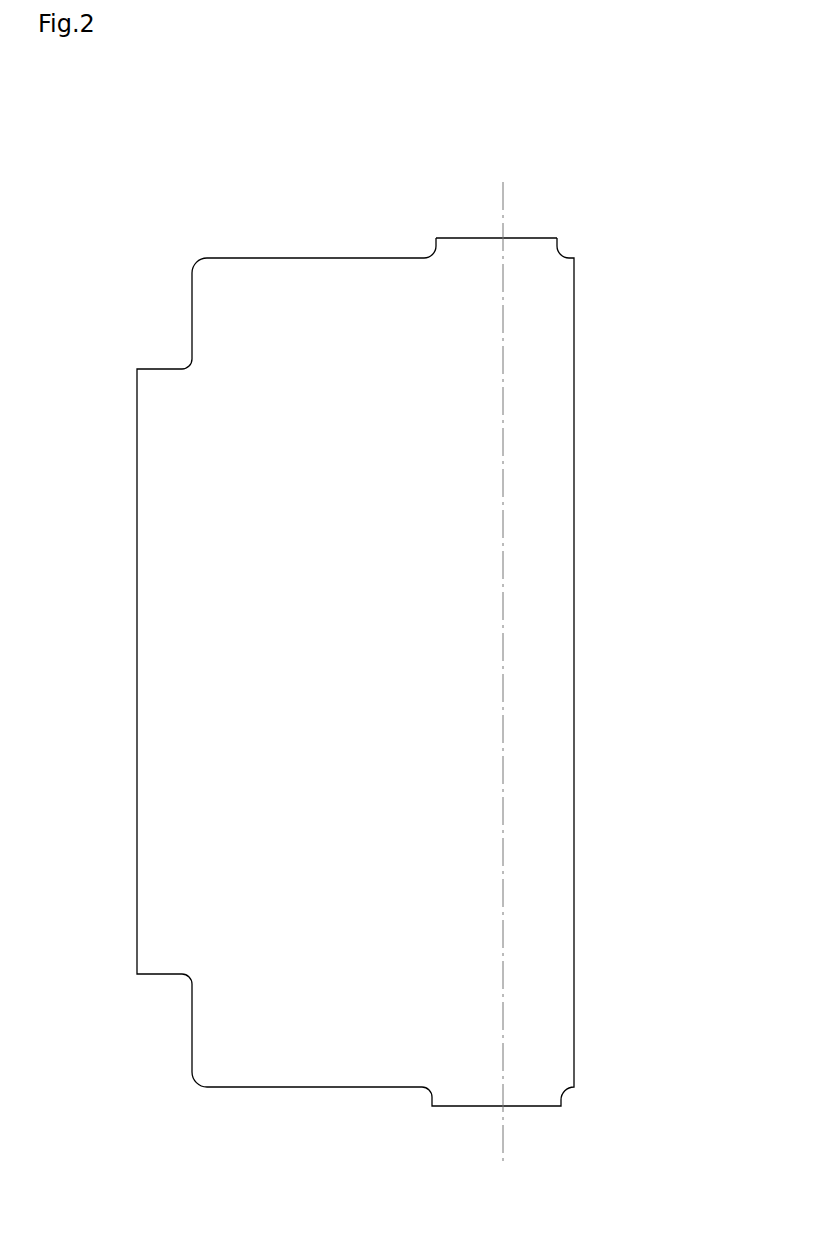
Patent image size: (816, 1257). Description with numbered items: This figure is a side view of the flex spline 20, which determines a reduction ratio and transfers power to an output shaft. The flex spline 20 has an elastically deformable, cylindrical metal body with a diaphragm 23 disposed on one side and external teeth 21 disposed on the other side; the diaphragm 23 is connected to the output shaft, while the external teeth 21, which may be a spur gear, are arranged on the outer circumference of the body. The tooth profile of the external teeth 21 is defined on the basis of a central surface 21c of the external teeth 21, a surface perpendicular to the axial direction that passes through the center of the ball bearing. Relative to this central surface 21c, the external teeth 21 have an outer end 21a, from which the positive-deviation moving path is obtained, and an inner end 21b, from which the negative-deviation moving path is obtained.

The flex spline 20 is at (151, 116).
The external teeth 21 is at (488, 238).
The outer end of the external teeth 21a is at (558, 238).
The inner end of the external teeth 21b is at (435, 238).
The central surface of the external teeth 21c is at (503, 613).
The diaphragm 23 is at (137, 420).